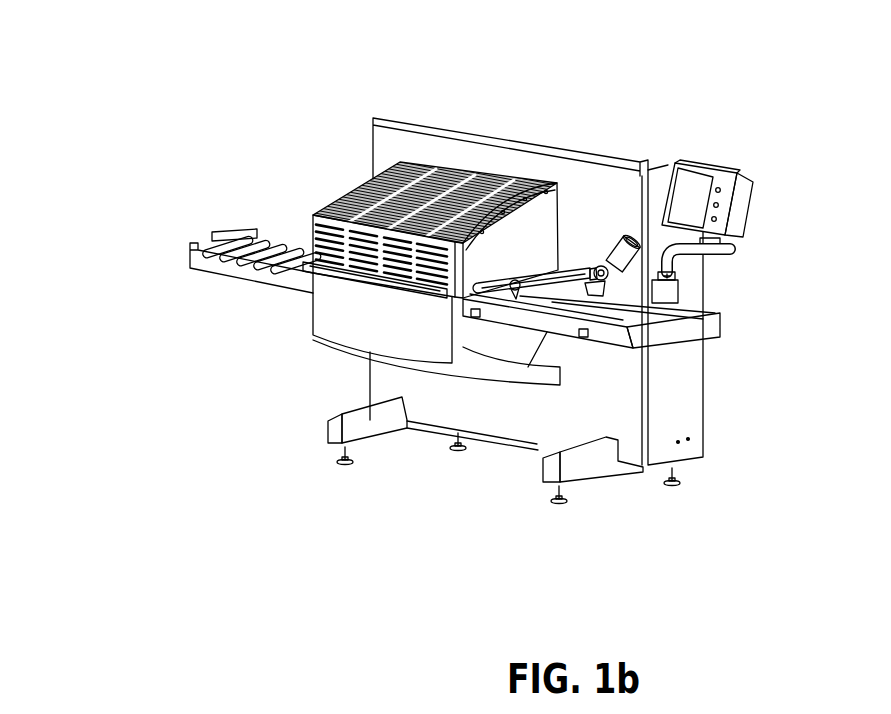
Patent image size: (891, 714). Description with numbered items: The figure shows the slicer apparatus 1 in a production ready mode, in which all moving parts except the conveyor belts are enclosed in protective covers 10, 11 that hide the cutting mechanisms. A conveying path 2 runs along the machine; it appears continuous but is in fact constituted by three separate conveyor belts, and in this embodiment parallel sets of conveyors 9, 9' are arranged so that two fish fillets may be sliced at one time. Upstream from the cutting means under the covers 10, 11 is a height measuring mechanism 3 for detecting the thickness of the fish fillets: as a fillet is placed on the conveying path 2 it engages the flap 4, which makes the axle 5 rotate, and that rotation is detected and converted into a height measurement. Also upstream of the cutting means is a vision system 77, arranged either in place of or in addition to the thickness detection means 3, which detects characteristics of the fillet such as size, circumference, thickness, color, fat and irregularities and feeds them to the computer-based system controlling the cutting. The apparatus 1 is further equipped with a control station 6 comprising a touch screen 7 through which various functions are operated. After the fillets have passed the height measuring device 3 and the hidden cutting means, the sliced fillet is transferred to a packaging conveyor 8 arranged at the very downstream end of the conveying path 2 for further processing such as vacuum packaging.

The apparatus 1 is at (597, 59).
The conveying path 2 is at (700, 353).
The height measuring mechanism 3 is at (565, 268).
The flap 4 is at (547, 293).
The axle 5 is at (537, 281).
The control station 6 is at (740, 217).
The touch screen 7 is at (693, 200).
The packaging conveyor 8 is at (207, 263).
The conveyor 9 is at (672, 325).
The conveyor 9' is at (694, 343).
The protective cover 10 is at (413, 215).
The protective cover 11 is at (393, 445).
The vision system 77 is at (642, 268).